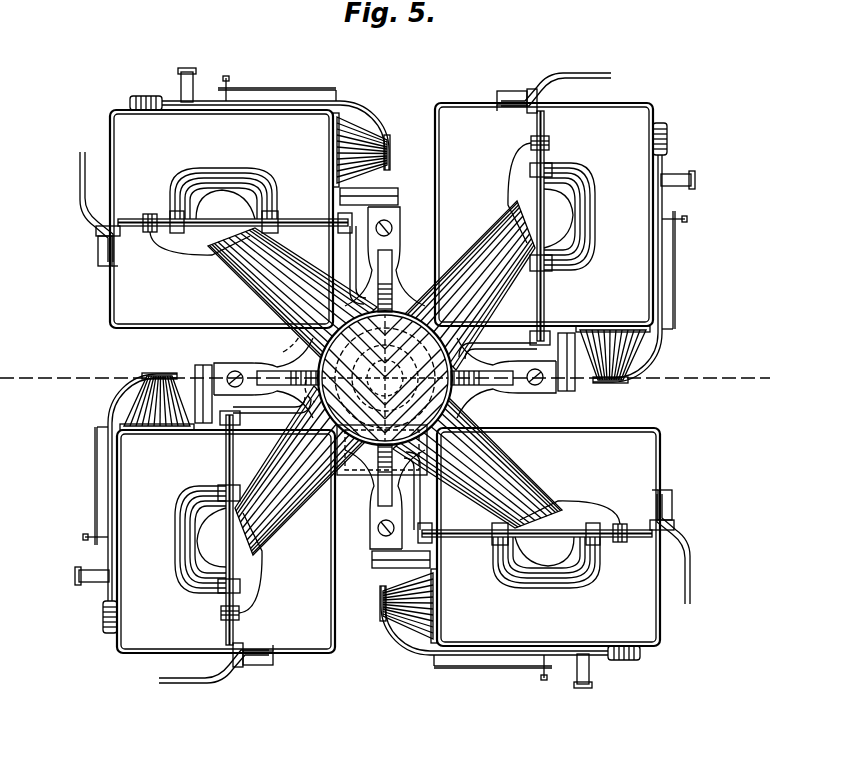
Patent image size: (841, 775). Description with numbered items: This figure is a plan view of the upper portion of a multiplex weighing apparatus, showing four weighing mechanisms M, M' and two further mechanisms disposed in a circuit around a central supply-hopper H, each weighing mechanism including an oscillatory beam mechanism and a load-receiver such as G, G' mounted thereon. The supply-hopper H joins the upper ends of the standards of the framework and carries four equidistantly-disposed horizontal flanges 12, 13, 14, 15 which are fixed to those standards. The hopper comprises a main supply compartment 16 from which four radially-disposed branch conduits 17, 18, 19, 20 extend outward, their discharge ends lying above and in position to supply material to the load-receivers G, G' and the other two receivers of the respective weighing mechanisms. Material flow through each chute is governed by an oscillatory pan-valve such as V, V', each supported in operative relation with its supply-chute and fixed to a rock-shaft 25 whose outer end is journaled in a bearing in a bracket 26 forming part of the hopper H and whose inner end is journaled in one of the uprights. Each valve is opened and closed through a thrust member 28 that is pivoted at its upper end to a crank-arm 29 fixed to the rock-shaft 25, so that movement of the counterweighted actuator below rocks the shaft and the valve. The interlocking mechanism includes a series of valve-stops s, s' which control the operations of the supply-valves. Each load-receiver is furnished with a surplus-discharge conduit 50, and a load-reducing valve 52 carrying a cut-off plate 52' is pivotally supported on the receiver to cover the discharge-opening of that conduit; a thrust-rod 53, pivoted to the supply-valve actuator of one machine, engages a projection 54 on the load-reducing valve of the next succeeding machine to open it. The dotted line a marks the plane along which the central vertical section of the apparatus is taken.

The horizontal flange 12 is at (370, 532).
The horizontal flange 13 is at (222, 368).
The horizontal flange 14 is at (393, 228).
The horizontal flange 15 is at (540, 385).
The main supply compartment 16 is at (283, 352).
The branch conduit 17 is at (477, 462).
The branch conduit 18 is at (301, 470).
The branch conduit 19 is at (292, 294).
The branch conduit 20 is at (469, 285).
The rock-shaft 25 is at (305, 219).
The bracket 26 is at (148, 214).
The thrust member 28 is at (80, 188).
The crank-arm 29 is at (97, 242).
The surplus-discharge conduit 50 is at (365, 125).
The load-reducing valve 52 is at (370, 380).
The cut-off plate 52' is at (388, 373).
The thrust-rod 53 is at (262, 88).
The projection 54 is at (226, 76).
The valve-stop s is at (413, 510).
The valve-stop s' is at (253, 408).
The supply-hopper H is at (452, 402).
The oscillatory valve V is at (556, 546).
The oscillatory valve V' is at (195, 541).
The load-receiver G is at (548, 537).
The load-receiver G' is at (226, 541).
The weighing mechanism M is at (567, 549).
The weighing mechanism M' is at (193, 550).
The section line a is at (385, 367).